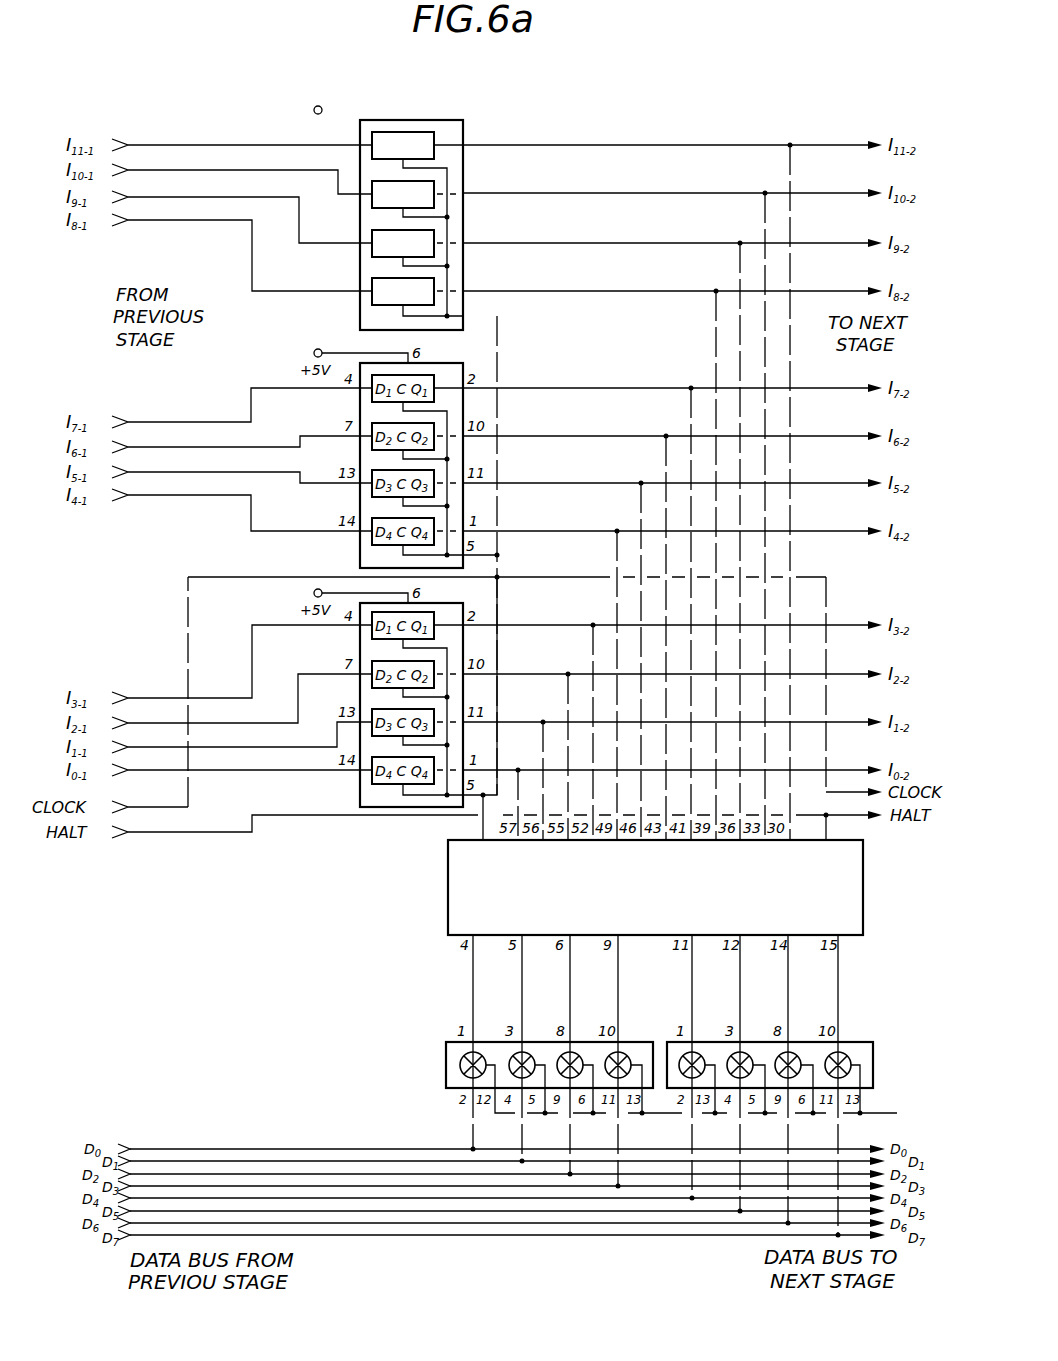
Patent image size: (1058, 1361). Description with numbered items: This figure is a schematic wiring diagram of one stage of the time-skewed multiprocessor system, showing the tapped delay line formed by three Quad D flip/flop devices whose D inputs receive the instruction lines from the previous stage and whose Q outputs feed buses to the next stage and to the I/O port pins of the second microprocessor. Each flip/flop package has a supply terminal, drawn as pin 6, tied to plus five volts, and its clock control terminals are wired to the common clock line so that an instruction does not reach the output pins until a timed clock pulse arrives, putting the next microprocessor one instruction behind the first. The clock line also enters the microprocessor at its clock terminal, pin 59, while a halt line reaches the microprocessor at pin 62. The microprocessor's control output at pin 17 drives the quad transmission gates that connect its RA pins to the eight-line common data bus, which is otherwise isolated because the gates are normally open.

The quad D flip-flop register package (+5V supply pin) 6 is at (322, 110).
The ROM/decoder RB1 output enable pin 17 is at (860, 1113).
The RB1 clock input pin 59 is at (472, 817).
The RB1 halt input pin 62 is at (814, 827).